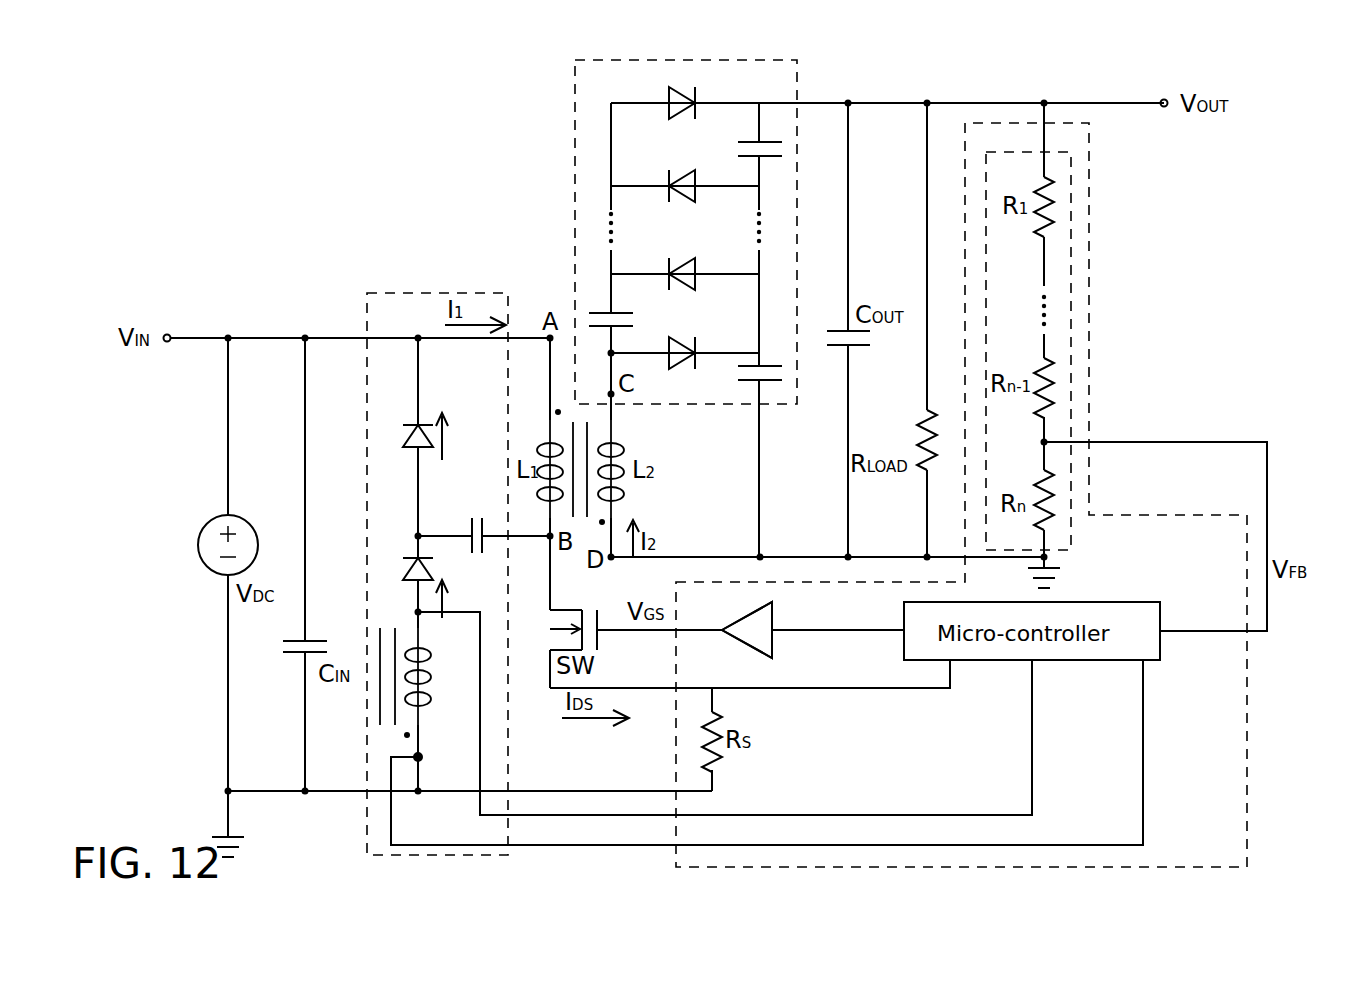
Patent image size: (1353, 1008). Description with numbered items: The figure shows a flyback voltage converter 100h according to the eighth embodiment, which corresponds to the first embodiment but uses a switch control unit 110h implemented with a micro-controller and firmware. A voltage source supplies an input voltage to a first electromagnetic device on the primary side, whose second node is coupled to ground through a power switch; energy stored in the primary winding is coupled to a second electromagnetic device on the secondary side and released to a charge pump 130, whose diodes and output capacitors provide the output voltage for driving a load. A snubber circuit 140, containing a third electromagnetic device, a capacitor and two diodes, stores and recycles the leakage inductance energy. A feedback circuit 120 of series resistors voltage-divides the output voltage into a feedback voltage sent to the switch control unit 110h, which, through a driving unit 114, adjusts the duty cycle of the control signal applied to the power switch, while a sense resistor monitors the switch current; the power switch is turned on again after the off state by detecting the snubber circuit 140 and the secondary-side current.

The flyback voltage converter 100h is at (314, 158).
The switch control unit 110h is at (1248, 705).
The driving unit 114 is at (748, 615).
The feedback circuit 120 is at (1072, 352).
The charge pump 130 is at (575, 179).
The snubber circuit 140 is at (437, 292).